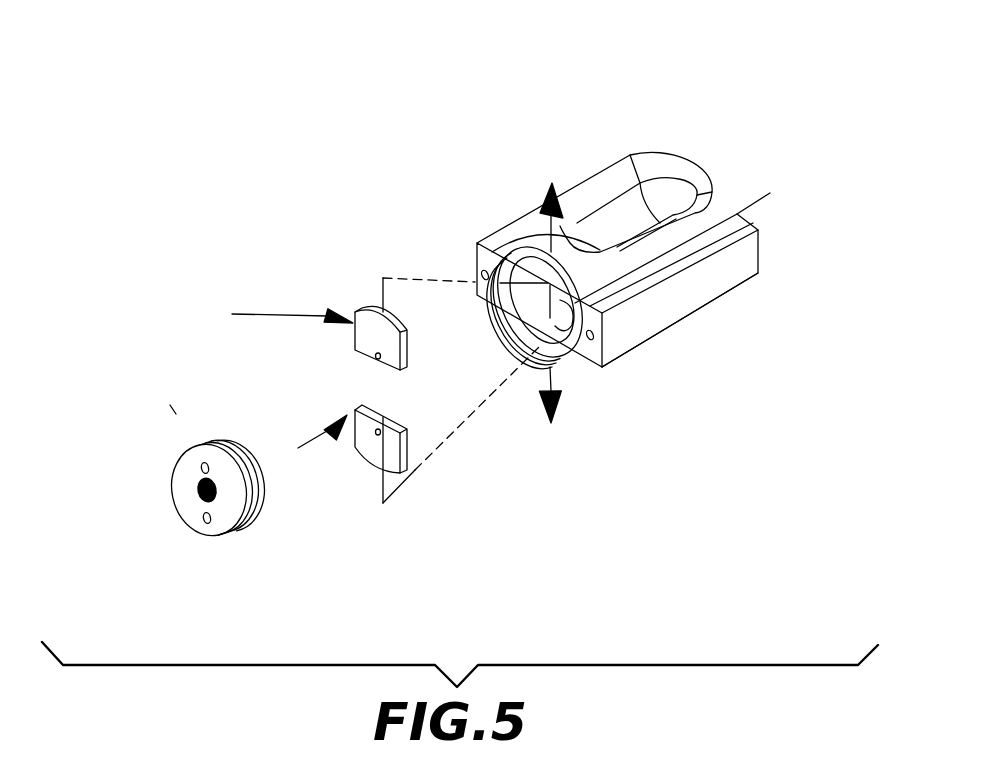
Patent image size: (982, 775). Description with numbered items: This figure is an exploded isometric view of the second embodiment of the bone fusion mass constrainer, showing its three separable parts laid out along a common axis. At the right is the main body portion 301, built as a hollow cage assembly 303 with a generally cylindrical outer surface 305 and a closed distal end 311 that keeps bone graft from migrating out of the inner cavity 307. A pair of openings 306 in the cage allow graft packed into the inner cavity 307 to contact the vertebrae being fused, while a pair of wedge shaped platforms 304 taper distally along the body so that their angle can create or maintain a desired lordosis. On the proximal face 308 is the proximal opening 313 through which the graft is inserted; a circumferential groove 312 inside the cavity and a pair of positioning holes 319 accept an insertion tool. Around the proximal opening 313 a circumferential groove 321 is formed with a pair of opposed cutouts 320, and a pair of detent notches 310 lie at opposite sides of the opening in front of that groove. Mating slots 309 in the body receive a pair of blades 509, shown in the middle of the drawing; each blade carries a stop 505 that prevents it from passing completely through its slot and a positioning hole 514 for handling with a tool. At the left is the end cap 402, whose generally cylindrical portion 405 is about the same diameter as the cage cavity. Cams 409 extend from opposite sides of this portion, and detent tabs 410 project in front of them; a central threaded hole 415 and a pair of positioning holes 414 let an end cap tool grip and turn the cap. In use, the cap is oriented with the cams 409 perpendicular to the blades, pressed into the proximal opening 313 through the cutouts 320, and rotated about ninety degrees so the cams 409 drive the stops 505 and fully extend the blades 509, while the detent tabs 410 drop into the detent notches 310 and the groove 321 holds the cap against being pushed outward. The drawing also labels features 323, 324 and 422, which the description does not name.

The main body portion 301 is at (672, 345).
The hollow cage assembly 303 is at (713, 243).
The wedge shaped platforms 304 is at (636, 158).
The cylindrical outer surface 305 is at (720, 198).
The openings 306 is at (626, 158).
The inner cavity 307 is at (478, 242).
The proximal face 308 is at (612, 345).
The mating slots 309 is at (532, 238).
The detent notches 310 is at (537, 353).
The closed distal end 311 is at (678, 196).
The circumferential groove 312 is at (585, 205).
The proximal opening 313 is at (513, 343).
The positioning holes 319 is at (593, 340).
The opposed cutouts 320 is at (498, 276).
The circumferential groove 321 is at (502, 312).
The upward motion arrow 323 is at (573, 353).
The downward motion arrow 324 is at (540, 358).
The end cap 402 is at (180, 452).
The cylindrical portion 405 is at (180, 418).
The cams 409 is at (262, 530).
The detent tabs 410 is at (248, 525).
The positioning holes 414 is at (202, 470).
The central threaded hole 415 is at (200, 503).
The holder flange 422 is at (251, 465).
The stop 505 is at (377, 358).
The blades 509 is at (425, 362).
The positioning hole 514 is at (260, 401).